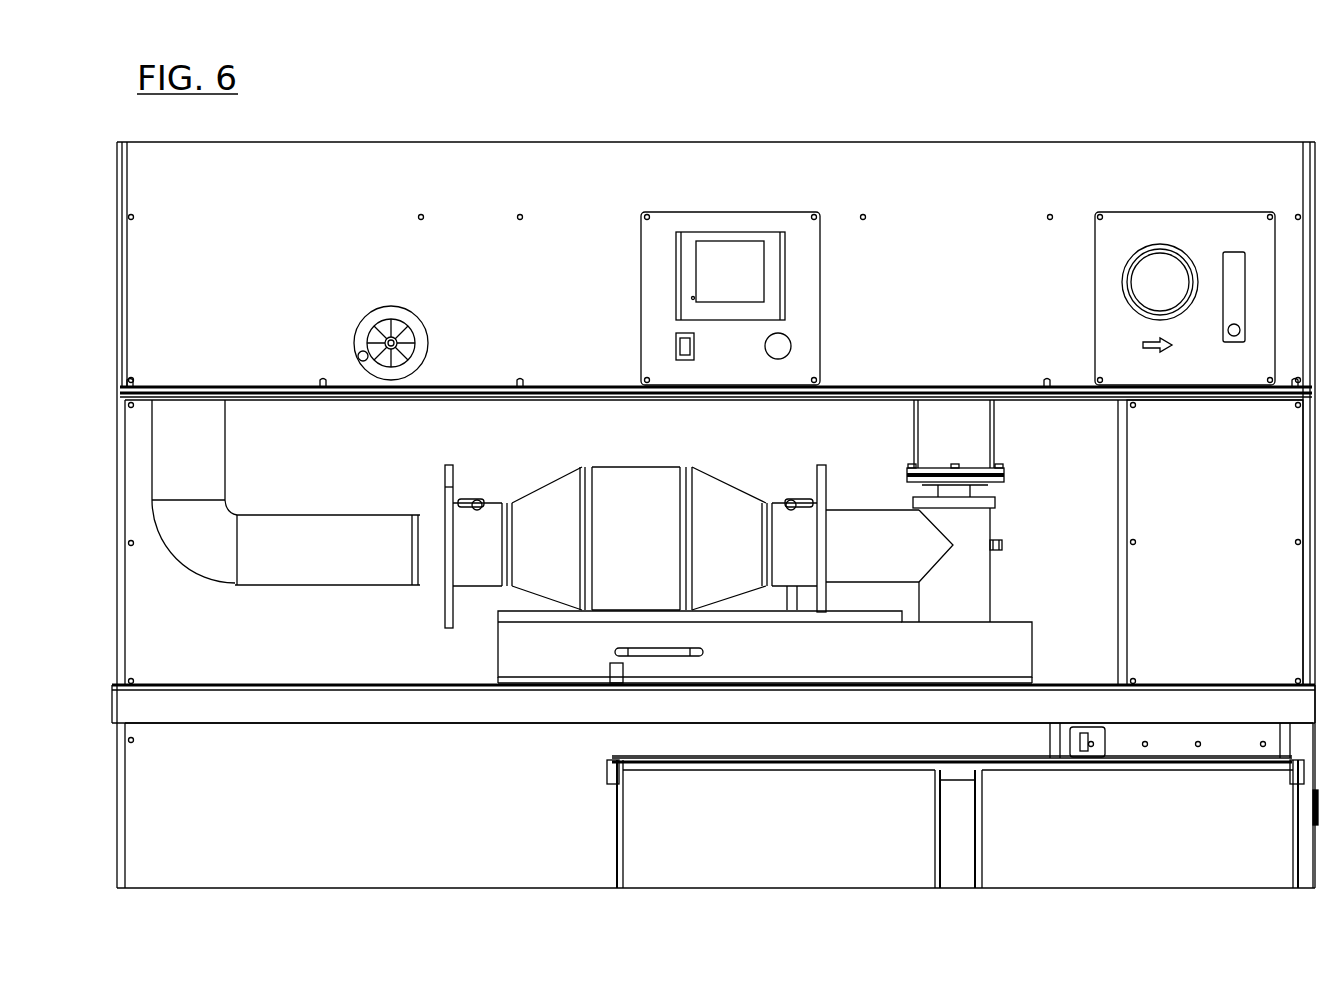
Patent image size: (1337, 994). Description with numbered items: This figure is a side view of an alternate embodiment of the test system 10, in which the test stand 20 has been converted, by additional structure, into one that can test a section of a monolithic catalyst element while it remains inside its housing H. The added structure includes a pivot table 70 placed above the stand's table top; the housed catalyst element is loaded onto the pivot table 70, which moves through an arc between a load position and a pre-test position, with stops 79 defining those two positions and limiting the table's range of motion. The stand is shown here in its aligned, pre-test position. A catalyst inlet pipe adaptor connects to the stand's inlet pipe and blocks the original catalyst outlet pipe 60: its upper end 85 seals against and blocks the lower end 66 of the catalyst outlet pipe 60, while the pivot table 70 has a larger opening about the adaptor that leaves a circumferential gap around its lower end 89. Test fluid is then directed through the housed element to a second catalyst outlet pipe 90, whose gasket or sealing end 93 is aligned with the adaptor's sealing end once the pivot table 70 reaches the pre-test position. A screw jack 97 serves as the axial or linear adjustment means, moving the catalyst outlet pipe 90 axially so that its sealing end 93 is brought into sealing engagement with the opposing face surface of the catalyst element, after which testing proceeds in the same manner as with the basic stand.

The test system 10 is at (270, 307).
The test stand 20 is at (180, 685).
The catalyst outlet pipe 60 is at (990, 435).
The lower end 66 is at (1004, 472).
The pivot table 70 is at (990, 648).
The stop 79 is at (614, 672).
The upper end 85 is at (921, 470).
The lower end 89 is at (945, 688).
The catalyst outlet pipe 90 is at (307, 587).
The gasket or sealing end 93 is at (421, 538).
The screw jack 97 is at (412, 310).
The housing H is at (627, 467).